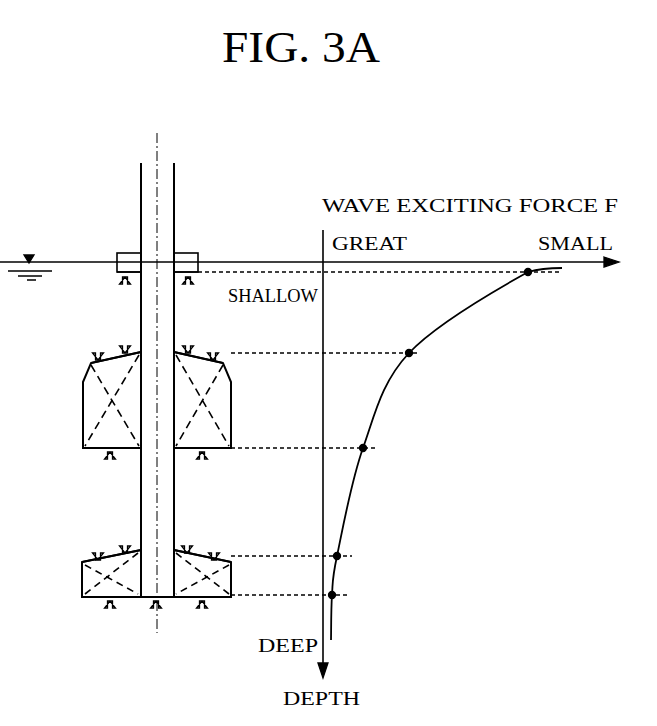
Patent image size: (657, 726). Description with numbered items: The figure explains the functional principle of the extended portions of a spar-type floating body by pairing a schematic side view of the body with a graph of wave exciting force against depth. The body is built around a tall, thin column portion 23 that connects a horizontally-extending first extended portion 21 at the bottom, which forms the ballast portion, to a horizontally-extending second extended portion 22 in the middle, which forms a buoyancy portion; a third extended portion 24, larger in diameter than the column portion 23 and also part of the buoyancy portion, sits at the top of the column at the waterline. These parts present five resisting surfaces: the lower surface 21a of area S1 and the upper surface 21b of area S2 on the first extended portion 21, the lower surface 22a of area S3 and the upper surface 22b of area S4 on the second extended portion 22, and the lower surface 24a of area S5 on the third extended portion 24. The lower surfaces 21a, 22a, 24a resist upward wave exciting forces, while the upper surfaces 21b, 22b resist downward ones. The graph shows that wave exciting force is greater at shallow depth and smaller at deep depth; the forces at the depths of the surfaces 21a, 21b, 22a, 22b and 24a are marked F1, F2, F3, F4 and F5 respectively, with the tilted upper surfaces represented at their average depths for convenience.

The first extended portion 21 is at (82, 578).
The lower surface of the first extended portion 21a is at (90, 600).
The upper surface of the first extended portion 21b is at (88, 559).
The second extended portion 22 is at (83, 405).
The lower surface of the second extended portion 22a is at (88, 452).
The upper surface of the second extended portion 22b is at (90, 361).
The column portion 23 is at (175, 497).
The third extended portion 24 is at (118, 253).
The lower surface of the third extended portion 24a is at (118, 274).
The area of the lower surface of the first extended portion S1 is at (290, 607).
The area of the upper surface of the first extended portion S2 is at (291, 545).
The area of the lower surface of the second extended portion S3 is at (303, 461).
The area of the upper surface of the second extended portion S4 is at (325, 342).
The area of the lower surface of the third extended portion S5 is at (379, 283).
The wave exciting force at the lower surface of the first extended portion F1 is at (351, 596).
The wave exciting force at the upper surface of the first extended portion F2 is at (358, 557).
The wave exciting force at the lower surface of the second extended portion F3 is at (379, 449).
The wave exciting force at the upper surface of the second extended portion F4 is at (427, 354).
The wave exciting force at the lower surface of the third extended portion F5 is at (531, 286).